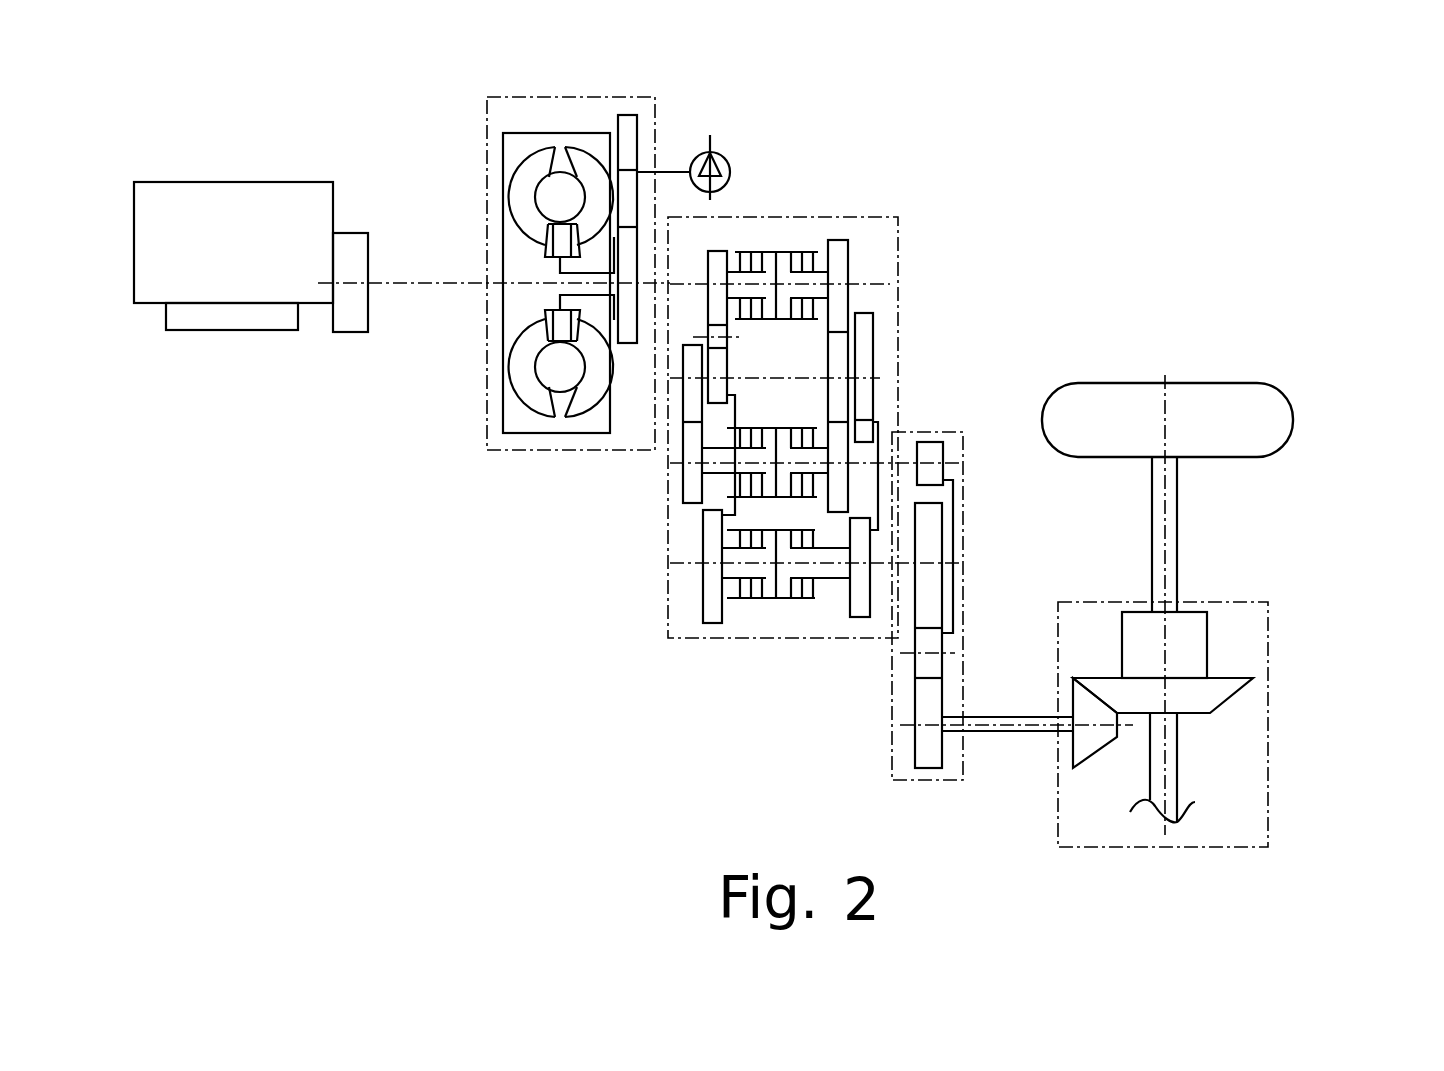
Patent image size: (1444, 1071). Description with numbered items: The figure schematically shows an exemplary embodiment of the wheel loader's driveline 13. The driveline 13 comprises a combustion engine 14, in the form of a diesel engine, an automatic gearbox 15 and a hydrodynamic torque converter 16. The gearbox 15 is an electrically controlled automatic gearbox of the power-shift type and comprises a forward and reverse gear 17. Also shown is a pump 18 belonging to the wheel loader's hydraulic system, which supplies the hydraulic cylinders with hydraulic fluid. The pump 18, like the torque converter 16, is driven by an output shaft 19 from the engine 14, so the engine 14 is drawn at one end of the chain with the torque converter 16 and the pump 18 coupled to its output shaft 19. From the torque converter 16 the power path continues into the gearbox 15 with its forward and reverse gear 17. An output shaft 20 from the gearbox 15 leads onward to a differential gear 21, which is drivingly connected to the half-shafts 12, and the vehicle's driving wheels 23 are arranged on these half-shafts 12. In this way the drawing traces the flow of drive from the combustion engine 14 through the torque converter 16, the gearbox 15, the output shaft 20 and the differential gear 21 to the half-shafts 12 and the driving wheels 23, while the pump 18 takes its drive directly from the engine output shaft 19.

The half-shafts 12 is at (1172, 483).
The driveline 13 is at (1005, 148).
The combustion engine 14 is at (198, 188).
The automatic gearbox 15 is at (915, 258).
The hydrodynamic torque converter 16 is at (575, 92).
The forward and reverse gear 17 is at (818, 205).
The pump 18 is at (727, 167).
The output shaft 19 is at (440, 282).
The output shaft 20 is at (1017, 732).
The differential gear 21 is at (1283, 690).
The driving wheels 23 is at (1187, 395).